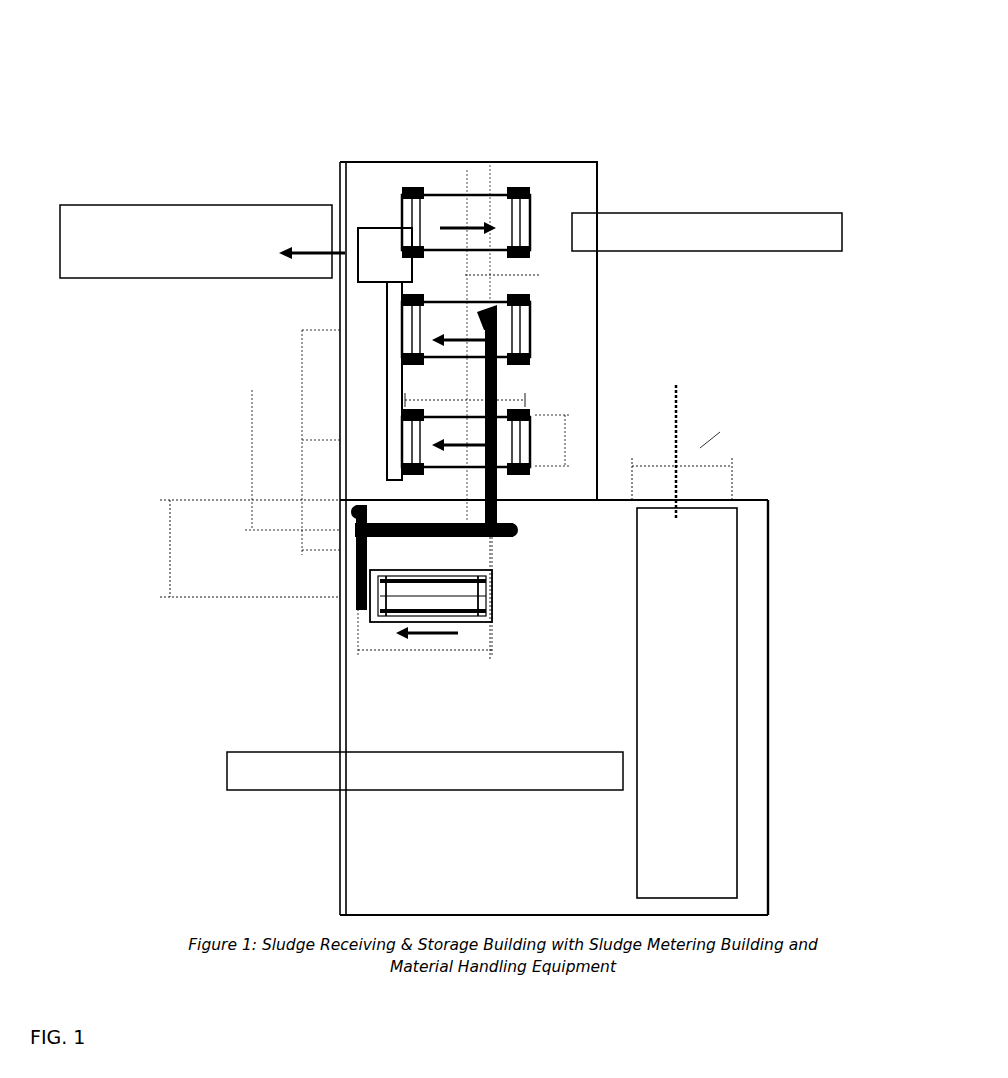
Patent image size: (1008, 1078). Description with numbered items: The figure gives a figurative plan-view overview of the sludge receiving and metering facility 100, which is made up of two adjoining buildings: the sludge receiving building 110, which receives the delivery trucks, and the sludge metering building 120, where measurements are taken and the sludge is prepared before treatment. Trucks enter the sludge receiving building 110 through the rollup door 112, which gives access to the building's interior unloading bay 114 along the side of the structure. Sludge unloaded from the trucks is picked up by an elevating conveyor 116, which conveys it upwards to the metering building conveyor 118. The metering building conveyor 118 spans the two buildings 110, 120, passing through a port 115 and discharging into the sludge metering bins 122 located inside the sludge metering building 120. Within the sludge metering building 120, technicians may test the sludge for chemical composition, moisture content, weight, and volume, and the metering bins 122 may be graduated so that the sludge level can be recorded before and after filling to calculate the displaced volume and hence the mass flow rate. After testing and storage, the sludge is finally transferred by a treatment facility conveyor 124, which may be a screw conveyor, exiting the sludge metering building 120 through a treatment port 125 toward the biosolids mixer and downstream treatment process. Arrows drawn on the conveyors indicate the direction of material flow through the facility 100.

The sludge receiving and metering facility 100 is at (764, 152).
The sludge receiving building 110 is at (207, 779).
The rollup door 112 is at (710, 500).
The unloading bay 114 is at (735, 686).
The port 115 is at (500, 500).
The elevating conveyor 116 is at (357, 575).
The metering building conveyor 118 is at (497, 375).
The sludge metering building 120 is at (248, 167).
The sludge metering bins 122 is at (413, 443).
The treatment facility conveyor 124 is at (357, 256).
The treatment port 125 is at (337, 237).